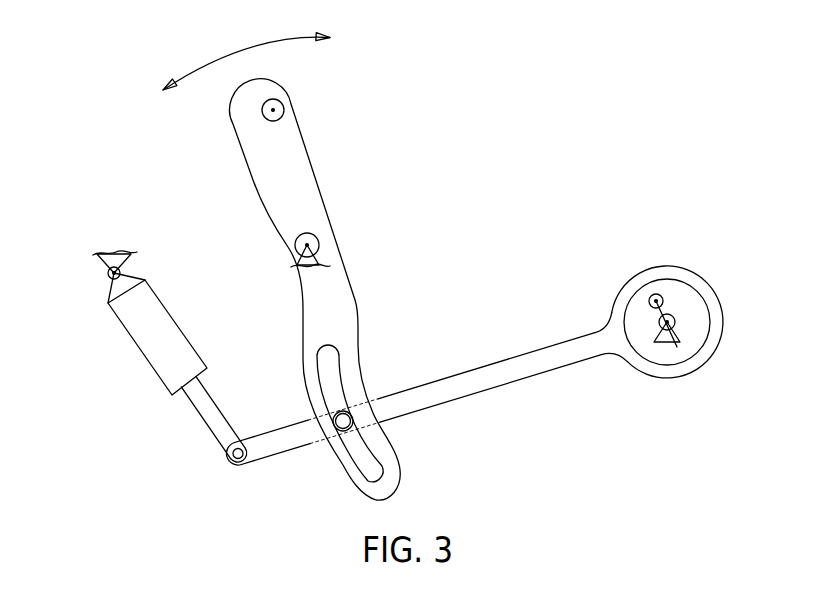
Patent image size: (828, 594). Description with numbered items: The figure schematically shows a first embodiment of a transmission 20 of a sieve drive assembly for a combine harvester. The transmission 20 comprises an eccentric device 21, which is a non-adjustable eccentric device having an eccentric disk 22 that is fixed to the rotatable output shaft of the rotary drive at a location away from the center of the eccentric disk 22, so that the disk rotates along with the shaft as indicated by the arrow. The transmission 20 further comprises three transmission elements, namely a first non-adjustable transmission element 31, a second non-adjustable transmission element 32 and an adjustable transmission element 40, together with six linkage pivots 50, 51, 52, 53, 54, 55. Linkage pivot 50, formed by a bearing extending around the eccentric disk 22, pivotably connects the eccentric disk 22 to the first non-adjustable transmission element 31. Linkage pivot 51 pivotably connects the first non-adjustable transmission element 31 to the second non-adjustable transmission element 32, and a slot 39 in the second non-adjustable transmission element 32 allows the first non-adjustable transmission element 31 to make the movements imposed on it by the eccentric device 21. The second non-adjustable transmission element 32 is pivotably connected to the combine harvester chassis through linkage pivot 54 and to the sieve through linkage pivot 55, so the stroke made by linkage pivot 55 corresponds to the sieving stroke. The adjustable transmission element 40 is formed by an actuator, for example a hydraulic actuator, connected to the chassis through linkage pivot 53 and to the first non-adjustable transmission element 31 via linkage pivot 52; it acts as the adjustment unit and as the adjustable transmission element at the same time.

The transmission 20 is at (485, 157).
The eccentric device 21 is at (682, 314).
The eccentric disk 22 is at (677, 347).
The first non-adjustable transmission element 31 is at (523, 369).
The second non-adjustable transmission element 32 is at (353, 325).
The slot 39 is at (378, 472).
The adjustable transmission element 40 is at (160, 366).
The linkage pivot 50 is at (650, 275).
The linkage pivot 51 is at (337, 428).
The linkage pivot 52 is at (240, 462).
The linkage pivot 53 is at (107, 276).
The linkage pivot 54 is at (318, 238).
The linkage pivot 55 is at (284, 110).